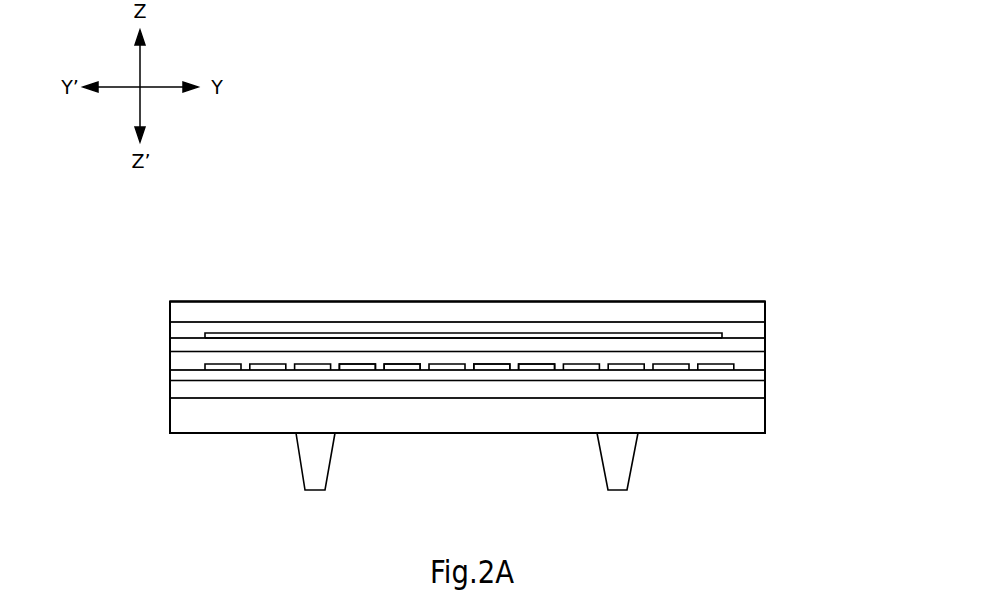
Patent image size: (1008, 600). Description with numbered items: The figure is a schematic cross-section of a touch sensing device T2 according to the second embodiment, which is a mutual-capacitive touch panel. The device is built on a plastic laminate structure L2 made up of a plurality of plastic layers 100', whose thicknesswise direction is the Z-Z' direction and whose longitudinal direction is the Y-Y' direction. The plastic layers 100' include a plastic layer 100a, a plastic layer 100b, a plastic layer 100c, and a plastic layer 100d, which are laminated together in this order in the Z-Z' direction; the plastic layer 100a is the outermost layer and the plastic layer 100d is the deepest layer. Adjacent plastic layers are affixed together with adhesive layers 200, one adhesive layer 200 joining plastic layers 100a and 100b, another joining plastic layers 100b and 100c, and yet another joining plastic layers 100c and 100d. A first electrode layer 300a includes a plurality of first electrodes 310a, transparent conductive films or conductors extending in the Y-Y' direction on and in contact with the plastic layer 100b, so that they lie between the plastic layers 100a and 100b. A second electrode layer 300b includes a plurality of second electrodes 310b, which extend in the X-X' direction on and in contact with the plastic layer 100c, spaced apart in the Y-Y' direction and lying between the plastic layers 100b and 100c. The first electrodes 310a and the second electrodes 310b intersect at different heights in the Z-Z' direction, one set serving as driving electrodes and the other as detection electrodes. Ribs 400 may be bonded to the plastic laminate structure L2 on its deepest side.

The plastic layers 100' is at (406, 365).
The plastic layer 100a is at (178, 312).
The plastic layer 100b is at (178, 345).
The plastic layer 100c is at (178, 374).
The plastic layer 100d is at (178, 413).
The adhesive layer 200 is at (553, 328).
The first electrode layer 300a is at (729, 331).
The second electrode layer 300b is at (741, 366).
The first electrodes 310a is at (416, 338).
The second electrodes 310b is at (360, 368).
The ribs 400 is at (315, 477).
The touch sensing device T2 is at (118, 258).
The plastic laminate structure L2 is at (312, 283).